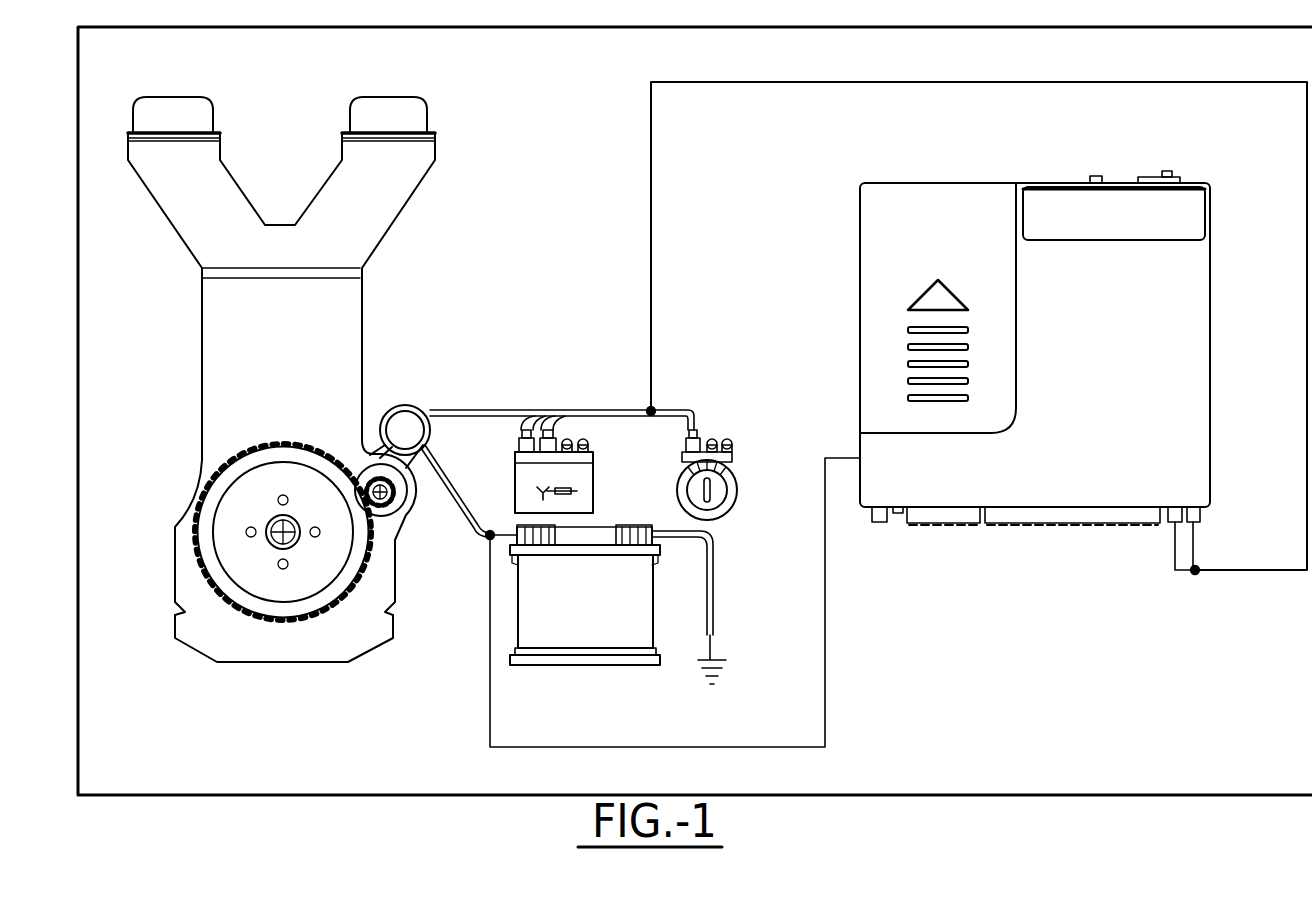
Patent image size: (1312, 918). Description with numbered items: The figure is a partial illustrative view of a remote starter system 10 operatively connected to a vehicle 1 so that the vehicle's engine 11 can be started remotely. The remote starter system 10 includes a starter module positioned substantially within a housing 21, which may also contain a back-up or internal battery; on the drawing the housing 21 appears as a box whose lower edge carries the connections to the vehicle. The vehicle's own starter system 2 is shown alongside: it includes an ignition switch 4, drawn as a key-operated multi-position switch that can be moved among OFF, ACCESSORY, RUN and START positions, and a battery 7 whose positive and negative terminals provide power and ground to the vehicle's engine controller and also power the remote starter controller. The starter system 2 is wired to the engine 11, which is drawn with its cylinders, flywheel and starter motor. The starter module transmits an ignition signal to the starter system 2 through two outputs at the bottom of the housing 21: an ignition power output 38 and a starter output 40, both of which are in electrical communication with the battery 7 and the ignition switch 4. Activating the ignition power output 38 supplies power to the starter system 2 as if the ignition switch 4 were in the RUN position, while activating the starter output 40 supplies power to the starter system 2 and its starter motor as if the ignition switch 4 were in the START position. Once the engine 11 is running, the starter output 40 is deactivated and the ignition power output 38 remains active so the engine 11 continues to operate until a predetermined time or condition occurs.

The vehicle 1 is at (1226, 75).
The starter system 2 is at (573, 378).
The ignition switch 4 is at (720, 492).
The battery 7 is at (567, 612).
The remote starter system 10 is at (995, 339).
The engine 11 is at (389, 182).
The housing 21 is at (1173, 486).
The ignition power output 38 is at (1200, 513).
The starter output 40 is at (1178, 505).